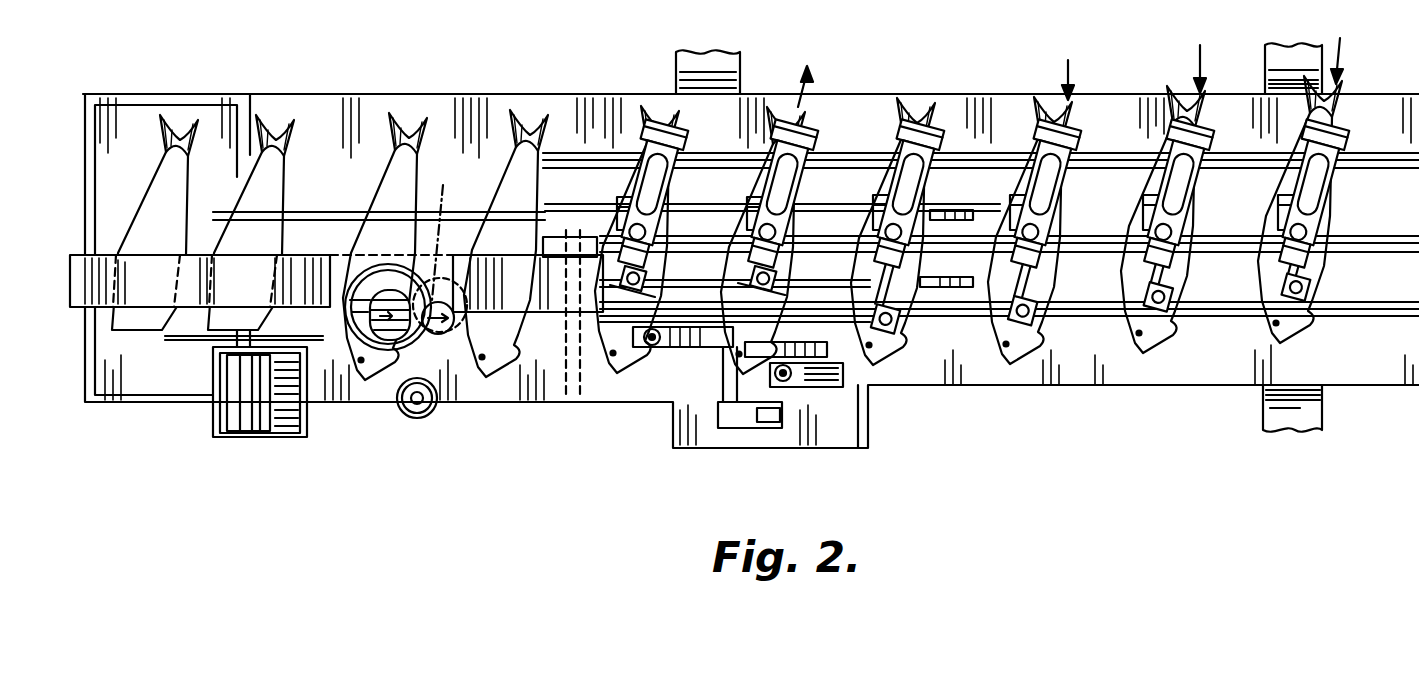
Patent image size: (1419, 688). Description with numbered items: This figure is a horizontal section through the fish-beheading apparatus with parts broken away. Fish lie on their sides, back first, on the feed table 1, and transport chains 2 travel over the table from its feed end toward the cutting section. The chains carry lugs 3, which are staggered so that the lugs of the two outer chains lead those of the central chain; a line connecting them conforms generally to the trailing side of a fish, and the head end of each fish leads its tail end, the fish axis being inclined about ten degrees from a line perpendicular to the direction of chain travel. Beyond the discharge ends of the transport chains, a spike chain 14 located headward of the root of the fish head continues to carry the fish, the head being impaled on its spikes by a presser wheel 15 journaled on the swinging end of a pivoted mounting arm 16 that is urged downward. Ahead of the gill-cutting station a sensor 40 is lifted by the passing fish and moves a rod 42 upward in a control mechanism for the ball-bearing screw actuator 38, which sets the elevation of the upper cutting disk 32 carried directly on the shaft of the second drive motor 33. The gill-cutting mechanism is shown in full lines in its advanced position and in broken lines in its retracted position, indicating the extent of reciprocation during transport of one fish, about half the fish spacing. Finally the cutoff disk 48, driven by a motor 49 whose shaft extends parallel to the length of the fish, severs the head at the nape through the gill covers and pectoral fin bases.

The feed table 1 is at (1123, 110).
The transport chains 2 is at (1377, 163).
The lugs 3 is at (1067, 232).
The spike chain 14 is at (318, 210).
The presser wheel 15 is at (733, 420).
The mounting arm 16 is at (827, 373).
The upper cutting disk 32 is at (390, 293).
The second drive motor 33 is at (392, 338).
The actuator 38 is at (417, 418).
The sensor 40 is at (693, 347).
The rod 42 is at (647, 330).
The cutoff disk 48 is at (178, 338).
The motor 49 is at (243, 410).